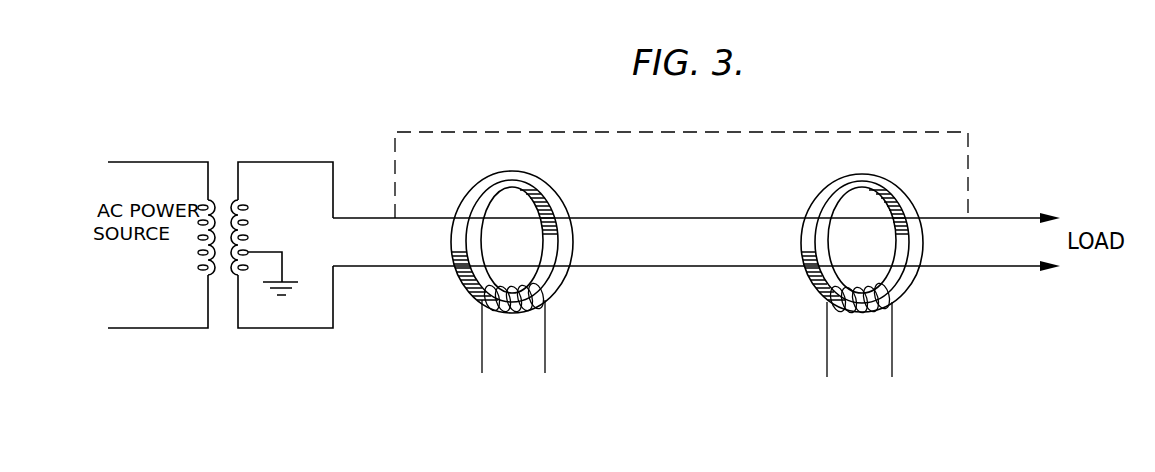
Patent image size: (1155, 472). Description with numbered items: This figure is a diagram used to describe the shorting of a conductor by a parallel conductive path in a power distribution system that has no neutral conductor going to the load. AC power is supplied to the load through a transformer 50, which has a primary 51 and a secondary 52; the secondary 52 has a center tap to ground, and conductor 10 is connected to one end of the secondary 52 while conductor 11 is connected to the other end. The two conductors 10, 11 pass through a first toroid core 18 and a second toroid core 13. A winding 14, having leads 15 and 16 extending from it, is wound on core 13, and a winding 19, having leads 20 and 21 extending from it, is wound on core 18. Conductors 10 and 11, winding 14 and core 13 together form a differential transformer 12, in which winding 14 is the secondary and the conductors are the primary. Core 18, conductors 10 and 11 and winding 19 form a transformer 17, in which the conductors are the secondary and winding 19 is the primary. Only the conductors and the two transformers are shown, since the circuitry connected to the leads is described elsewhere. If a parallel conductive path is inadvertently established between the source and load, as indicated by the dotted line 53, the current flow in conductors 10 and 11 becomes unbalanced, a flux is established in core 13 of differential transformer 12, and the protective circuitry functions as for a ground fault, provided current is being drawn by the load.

The conductor 10 is at (667, 217).
The conductor 11 is at (663, 268).
The differential transformer 12 is at (868, 259).
The second toroid core 13 is at (905, 200).
The winding 14 is at (895, 300).
The lead 15 is at (826, 365).
The lead 16 is at (894, 363).
The transformer 17 is at (522, 260).
The first toroid core 18 is at (548, 192).
The winding 19 is at (488, 306).
The lead 20 is at (482, 358).
The lead 21 is at (546, 359).
The transformer 50 is at (226, 201).
The primary 51 is at (200, 267).
The secondary 52 is at (248, 223).
The dotted line 53 is at (895, 130).